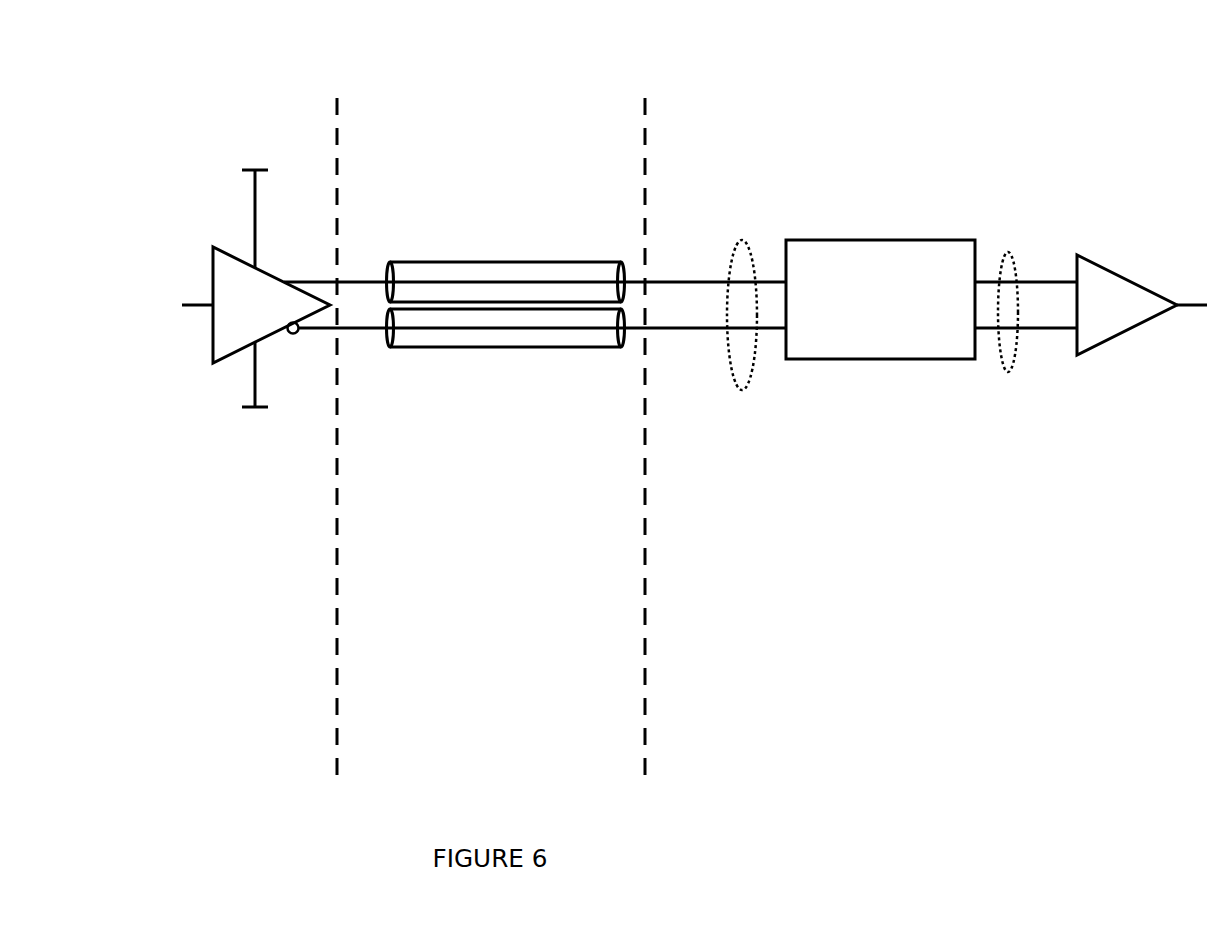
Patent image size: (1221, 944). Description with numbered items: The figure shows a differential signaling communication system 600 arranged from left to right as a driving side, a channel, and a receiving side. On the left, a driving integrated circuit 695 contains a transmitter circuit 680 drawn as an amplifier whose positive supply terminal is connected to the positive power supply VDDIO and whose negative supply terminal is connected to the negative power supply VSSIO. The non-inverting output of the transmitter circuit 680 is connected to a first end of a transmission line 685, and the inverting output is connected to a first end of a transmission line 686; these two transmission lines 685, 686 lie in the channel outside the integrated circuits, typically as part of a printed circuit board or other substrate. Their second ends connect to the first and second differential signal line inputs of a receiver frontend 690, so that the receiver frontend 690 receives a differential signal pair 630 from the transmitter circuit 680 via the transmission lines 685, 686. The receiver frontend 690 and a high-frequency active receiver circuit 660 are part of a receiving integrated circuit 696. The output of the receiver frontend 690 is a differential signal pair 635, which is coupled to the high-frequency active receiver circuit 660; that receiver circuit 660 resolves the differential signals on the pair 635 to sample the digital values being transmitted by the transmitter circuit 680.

The communication system 600 is at (1114, 52).
The driving integrated circuit 695 is at (185, 137).
The transmitter circuit 680 is at (213, 245).
The transmission line 685 is at (445, 262).
The transmission line 686 is at (455, 347).
The receiving integrated circuit 696 is at (813, 127).
The differential signal pair 630 is at (735, 250).
The receiver frontend 690 is at (900, 341).
The differential signal pair 635 is at (1008, 252).
The high-frequency active receiver circuit 660 is at (1090, 350).